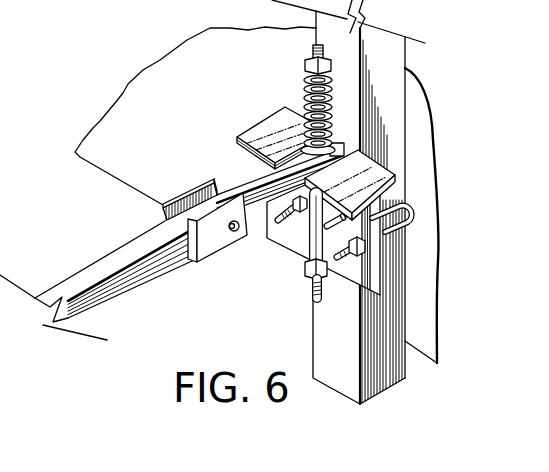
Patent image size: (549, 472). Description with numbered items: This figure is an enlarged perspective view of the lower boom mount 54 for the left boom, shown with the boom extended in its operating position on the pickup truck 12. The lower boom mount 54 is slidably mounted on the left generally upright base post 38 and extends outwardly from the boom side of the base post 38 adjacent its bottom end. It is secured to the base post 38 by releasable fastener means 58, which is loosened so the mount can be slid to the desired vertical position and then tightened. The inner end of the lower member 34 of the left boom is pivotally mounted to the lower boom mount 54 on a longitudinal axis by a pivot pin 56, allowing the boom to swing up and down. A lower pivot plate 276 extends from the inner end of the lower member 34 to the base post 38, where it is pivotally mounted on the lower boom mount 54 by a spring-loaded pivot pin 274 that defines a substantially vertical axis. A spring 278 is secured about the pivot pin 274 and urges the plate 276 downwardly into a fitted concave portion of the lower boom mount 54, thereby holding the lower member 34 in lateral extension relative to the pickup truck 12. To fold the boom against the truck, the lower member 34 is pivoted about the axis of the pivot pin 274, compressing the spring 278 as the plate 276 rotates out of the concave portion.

The pickup truck 12 is at (208, 73).
The lower member 34 is at (105, 265).
The left generally upright base post 38 is at (392, 125).
The lower boom mount 54 is at (258, 114).
The pivot pin 56 is at (243, 231).
The releasable fastener means 58 is at (416, 207).
The spring-loaded pivot pin 274 is at (313, 298).
The lower pivot plate 276 is at (257, 190).
The spring 278 is at (303, 100).